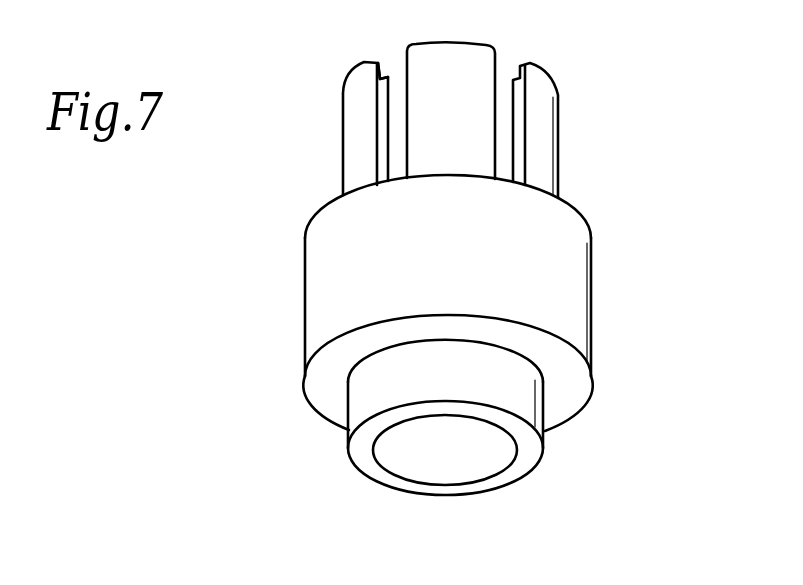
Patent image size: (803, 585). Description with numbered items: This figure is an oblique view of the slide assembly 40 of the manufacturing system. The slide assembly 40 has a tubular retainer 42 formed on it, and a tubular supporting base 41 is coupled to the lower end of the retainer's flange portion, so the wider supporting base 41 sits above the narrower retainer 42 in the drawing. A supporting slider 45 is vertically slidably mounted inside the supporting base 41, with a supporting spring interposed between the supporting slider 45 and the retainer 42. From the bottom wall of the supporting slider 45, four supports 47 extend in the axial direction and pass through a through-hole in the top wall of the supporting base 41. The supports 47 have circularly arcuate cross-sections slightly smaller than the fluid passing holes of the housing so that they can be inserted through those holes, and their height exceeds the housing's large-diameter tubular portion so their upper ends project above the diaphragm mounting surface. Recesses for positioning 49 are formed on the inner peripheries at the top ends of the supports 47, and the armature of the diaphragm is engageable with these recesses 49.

The slide assembly 40 is at (600, 72).
The tubular supporting base 41 is at (581, 293).
The tubular retainer 42 is at (531, 453).
The supporting slider 45 is at (561, 180).
The supports 47 is at (358, 107).
The recesses for positioning 49 is at (385, 72).